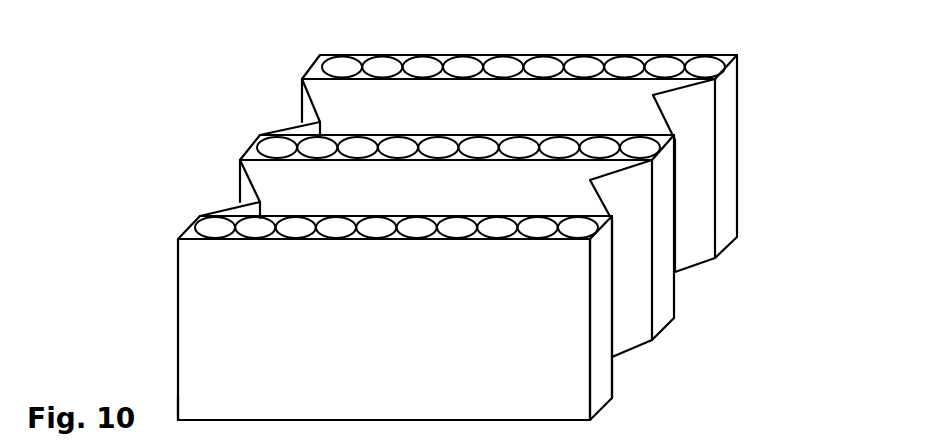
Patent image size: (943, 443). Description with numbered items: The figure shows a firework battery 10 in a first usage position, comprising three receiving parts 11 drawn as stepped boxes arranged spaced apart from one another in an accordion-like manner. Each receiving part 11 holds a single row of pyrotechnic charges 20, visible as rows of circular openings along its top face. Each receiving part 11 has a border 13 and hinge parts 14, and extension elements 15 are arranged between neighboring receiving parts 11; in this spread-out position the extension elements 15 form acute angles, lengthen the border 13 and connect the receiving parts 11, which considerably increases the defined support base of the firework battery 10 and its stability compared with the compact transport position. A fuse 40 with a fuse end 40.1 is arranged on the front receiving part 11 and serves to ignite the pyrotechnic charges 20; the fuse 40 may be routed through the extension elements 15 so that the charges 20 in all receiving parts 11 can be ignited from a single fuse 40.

The firework battery 10 is at (437, 210).
The receiving part 11 is at (542, 136).
The pyrotechnic charges 20 is at (412, 67).
The border 13 is at (225, 323).
The hinge part 14 is at (724, 115).
The extension element 15 is at (693, 198).
The fuse 40 is at (132, 366).
The fuse end 40.1 is at (123, 381).